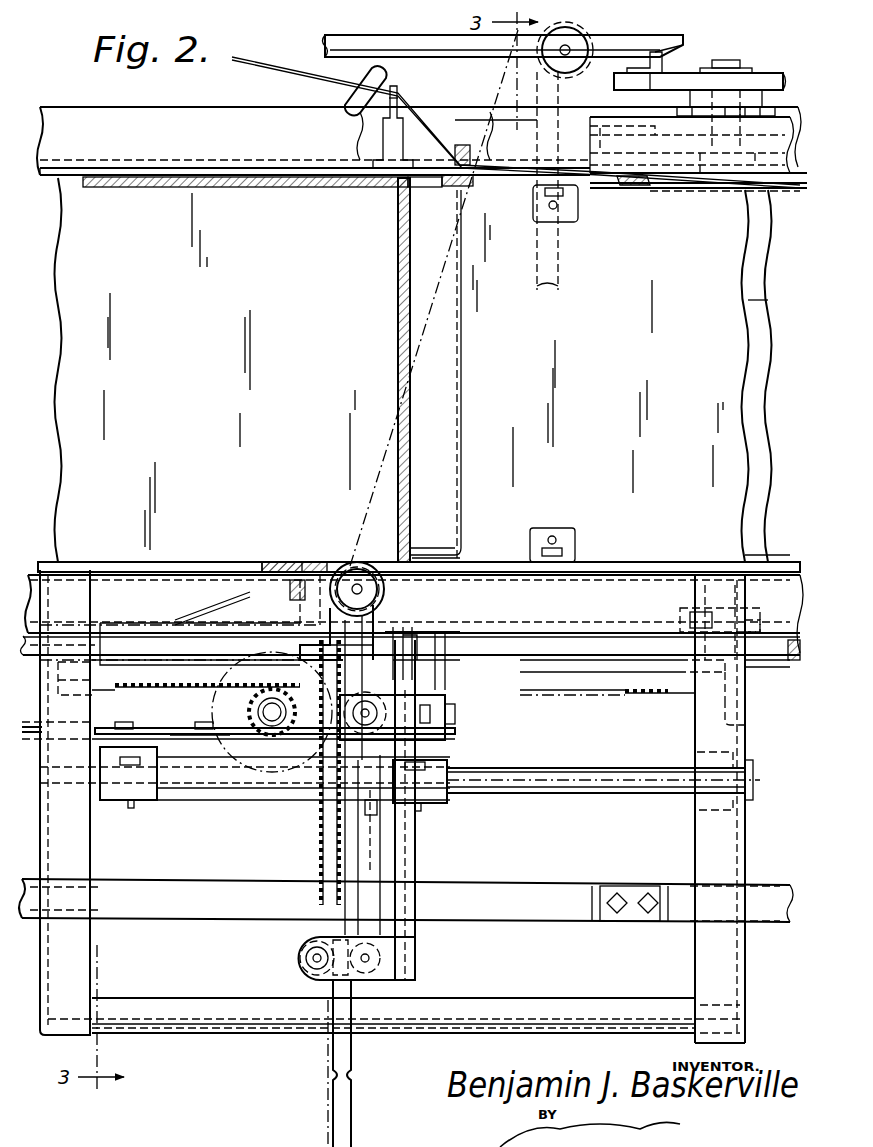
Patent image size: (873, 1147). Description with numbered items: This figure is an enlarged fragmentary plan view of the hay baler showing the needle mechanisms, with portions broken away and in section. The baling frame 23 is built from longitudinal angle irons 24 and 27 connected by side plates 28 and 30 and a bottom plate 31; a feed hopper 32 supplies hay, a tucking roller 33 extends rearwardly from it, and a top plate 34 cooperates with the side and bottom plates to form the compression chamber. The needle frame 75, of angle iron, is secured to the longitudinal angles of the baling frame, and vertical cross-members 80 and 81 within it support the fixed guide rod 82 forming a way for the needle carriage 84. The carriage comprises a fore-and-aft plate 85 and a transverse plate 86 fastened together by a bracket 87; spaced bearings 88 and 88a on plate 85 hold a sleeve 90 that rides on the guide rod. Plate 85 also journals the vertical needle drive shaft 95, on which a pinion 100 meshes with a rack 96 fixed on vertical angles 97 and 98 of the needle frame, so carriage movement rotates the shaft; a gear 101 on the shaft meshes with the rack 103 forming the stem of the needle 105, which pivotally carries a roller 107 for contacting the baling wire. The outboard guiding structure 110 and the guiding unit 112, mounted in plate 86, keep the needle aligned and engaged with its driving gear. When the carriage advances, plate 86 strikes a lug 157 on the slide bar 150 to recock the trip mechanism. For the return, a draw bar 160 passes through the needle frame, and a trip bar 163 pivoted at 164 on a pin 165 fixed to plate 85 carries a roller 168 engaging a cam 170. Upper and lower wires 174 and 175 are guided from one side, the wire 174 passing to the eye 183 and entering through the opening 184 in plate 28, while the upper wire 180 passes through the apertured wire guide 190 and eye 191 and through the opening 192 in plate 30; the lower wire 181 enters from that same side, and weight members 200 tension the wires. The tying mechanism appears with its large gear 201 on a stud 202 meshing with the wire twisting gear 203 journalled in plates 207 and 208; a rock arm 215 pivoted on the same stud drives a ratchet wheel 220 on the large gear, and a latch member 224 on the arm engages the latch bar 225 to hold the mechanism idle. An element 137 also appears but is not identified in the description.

The baling frame 23 is at (113, 105).
The longitudinal angle iron 27 is at (245, 115).
The side plate 30 is at (147, 177).
The bottom plate 31 is at (75, 368).
The top plate 34 is at (745, 298).
The feed hopper 32 is at (398, 340).
The tucking roller 33 is at (438, 383).
The side plate 28 is at (75, 562).
The longitudinal angle iron 24 is at (602, 578).
The needle frame 75 is at (275, 1043).
The slide bar 150 is at (190, 920).
The lug 157 is at (593, 892).
The cross-member 80 is at (55, 803).
The cross-member 81 is at (697, 752).
The guide rod 82 is at (590, 782).
The needle carriage 84 is at (453, 734).
The plate 85 is at (198, 750).
The plate 86 is at (410, 868).
The bracket 87 is at (347, 830).
The bearing 88 is at (152, 800).
The bearing 88a is at (445, 801).
The sleeve 90 is at (268, 755).
The needle drive shaft 95 is at (248, 660).
The rack 96 is at (152, 668).
The vertical angle 97 is at (105, 690).
The vertical angle 98 is at (740, 718).
The pinion 100 is at (270, 710).
The gear 101 is at (295, 660).
The rack 103 is at (563, 275).
The needle 105 is at (600, 28).
The roller 107 is at (395, 598).
The outboard guiding structure 110 is at (370, 975).
The guiding unit 112 is at (385, 703).
The guide 137 is at (175, 735).
The draw bar 160 is at (110, 625).
The trip bar 163 is at (590, 678).
The pivot 164 is at (450, 647).
The pin 165 is at (440, 642).
The roller 168 is at (690, 620).
The cam 170 is at (762, 635).
The upper wire 174 is at (253, 565).
The lower wire 175 is at (770, 560).
The upper wire 180 is at (273, 65).
The lower wire 181 is at (775, 187).
The eye 183 is at (270, 561).
The opening 184 is at (297, 580).
The apertured wire guide 190 is at (403, 110).
The eye 191 is at (463, 145).
The opening 192 is at (620, 187).
The weight member 200 is at (340, 101).
The large gear 201 is at (666, 185).
The stud 202 is at (733, 62).
The wire twisting gear 203 is at (586, 137).
The plate 207 is at (560, 120).
The plate 208 is at (593, 205).
The rock arm 215 is at (760, 82).
The ratchet wheel 220 is at (690, 103).
The latch member 224 is at (665, 72).
The latch bar 225 is at (423, 40).